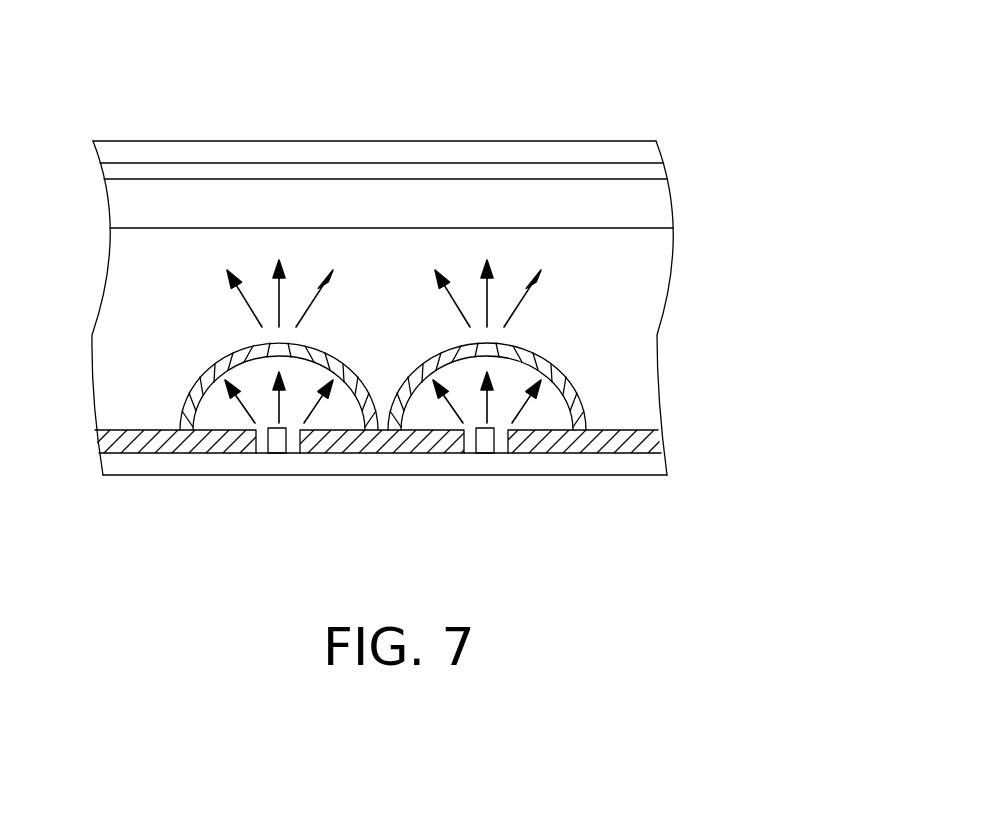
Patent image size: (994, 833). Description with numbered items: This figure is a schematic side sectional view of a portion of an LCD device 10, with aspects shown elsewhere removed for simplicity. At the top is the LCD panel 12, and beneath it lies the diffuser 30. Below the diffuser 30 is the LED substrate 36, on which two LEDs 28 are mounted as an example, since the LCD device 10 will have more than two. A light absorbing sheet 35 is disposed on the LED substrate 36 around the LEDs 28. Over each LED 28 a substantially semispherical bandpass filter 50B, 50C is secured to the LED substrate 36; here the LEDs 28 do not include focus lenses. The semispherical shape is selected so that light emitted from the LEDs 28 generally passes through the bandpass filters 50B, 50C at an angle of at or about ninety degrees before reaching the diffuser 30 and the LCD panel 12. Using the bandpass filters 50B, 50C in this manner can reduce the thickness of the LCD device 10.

The LCD device 10 is at (788, 32).
The LCD panel 12 is at (627, 148).
The diffuser 30 is at (658, 203).
The light absorbing sheet 35 is at (108, 430).
The LED substrate 36 is at (638, 463).
The LED 28 is at (272, 442).
The bandpass filter 50B is at (192, 394).
The bandpass filter 50C is at (572, 393).